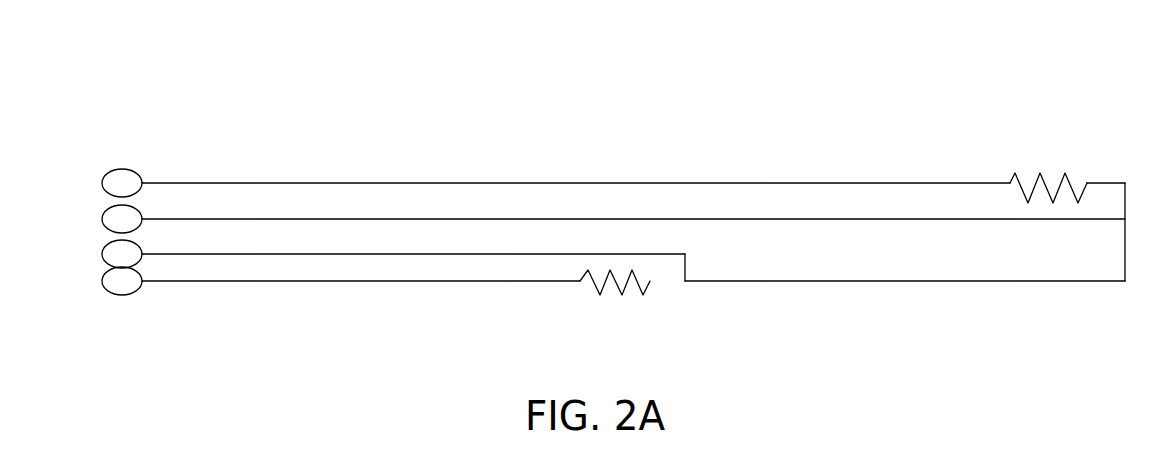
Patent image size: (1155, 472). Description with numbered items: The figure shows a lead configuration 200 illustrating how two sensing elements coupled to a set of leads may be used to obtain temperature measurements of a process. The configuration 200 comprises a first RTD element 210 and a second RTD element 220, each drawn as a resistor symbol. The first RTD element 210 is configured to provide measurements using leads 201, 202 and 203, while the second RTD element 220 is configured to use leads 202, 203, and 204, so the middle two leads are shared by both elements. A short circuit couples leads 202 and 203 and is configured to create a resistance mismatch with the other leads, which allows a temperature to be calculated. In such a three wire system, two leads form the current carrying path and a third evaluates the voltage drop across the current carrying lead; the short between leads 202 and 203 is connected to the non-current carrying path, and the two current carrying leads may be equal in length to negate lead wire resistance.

The configuration 200 is at (782, 97).
The lead 201 is at (528, 183).
The lead 202 is at (586, 219).
The lead 203 is at (366, 254).
The lead 204 is at (313, 281).
The first RTD element 210 is at (1053, 152).
The second RTD element 220 is at (632, 316).